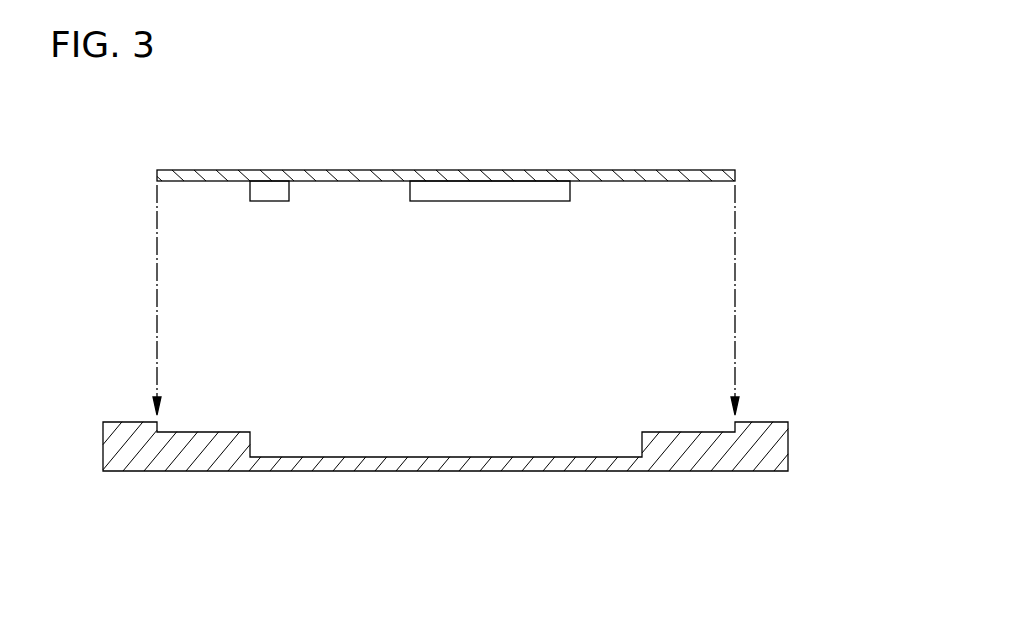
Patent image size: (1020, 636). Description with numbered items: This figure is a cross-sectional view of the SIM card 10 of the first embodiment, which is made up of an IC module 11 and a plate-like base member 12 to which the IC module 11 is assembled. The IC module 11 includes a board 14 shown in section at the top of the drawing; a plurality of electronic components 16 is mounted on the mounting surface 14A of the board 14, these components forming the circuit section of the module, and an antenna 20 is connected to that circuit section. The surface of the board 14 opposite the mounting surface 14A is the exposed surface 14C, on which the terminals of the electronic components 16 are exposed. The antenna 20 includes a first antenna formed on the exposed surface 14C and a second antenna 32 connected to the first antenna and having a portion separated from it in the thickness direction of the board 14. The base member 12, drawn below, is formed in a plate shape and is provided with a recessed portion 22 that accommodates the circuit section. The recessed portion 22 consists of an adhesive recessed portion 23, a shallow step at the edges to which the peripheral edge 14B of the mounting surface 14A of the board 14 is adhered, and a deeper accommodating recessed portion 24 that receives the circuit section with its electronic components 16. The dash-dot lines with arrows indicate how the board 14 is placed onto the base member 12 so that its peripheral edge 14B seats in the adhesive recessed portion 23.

The SIM card 10 is at (752, 148).
The IC module 11 is at (616, 169).
The base member 12 is at (695, 457).
The board 14 is at (355, 169).
The mounting surface 14A is at (638, 182).
The peripheral edge 14B is at (680, 182).
The exposed surface 14C is at (670, 169).
The electronic components 16 is at (480, 196).
The antenna 20 is at (267, 212).
The recessed portion 22 is at (392, 578).
The adhesive recessed portion 23 is at (217, 432).
The accommodating recessed portion 24 is at (376, 468).
The second antenna 32 is at (278, 199).